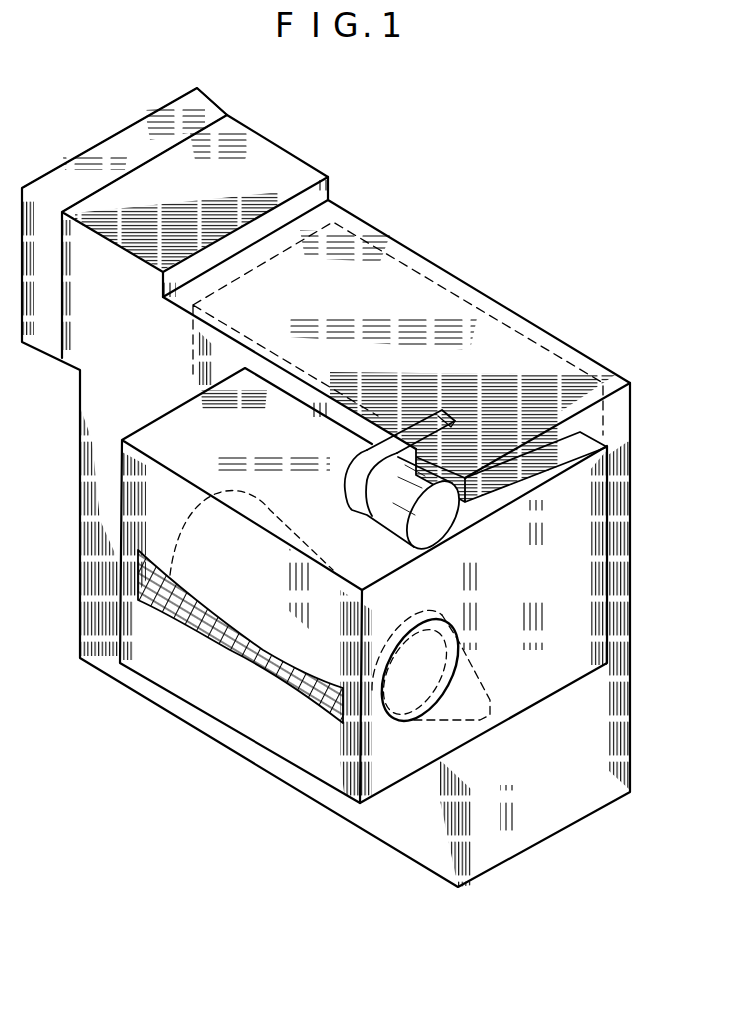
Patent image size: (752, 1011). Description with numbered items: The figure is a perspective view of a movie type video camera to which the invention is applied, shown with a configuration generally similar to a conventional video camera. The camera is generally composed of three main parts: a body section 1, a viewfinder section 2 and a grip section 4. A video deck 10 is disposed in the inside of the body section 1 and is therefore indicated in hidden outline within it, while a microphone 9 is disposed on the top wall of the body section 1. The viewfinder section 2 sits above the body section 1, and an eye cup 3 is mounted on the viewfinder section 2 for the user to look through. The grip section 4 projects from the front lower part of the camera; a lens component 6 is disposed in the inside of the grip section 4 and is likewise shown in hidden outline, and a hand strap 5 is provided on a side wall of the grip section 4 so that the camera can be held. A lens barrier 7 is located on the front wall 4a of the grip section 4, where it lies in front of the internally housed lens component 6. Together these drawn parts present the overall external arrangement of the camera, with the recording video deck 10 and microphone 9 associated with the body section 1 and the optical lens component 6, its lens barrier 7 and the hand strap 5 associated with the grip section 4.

The body section 1 is at (460, 271).
The viewfinder section 2 is at (299, 157).
The eye cup 3 is at (205, 116).
The grip section 4 is at (117, 462).
The front wall 4a is at (585, 571).
The hand strap 5 is at (263, 670).
The lens component 6 is at (190, 538).
The lens barrier 7 is at (493, 715).
The microphone 9 is at (452, 470).
The video deck 10 is at (397, 282).